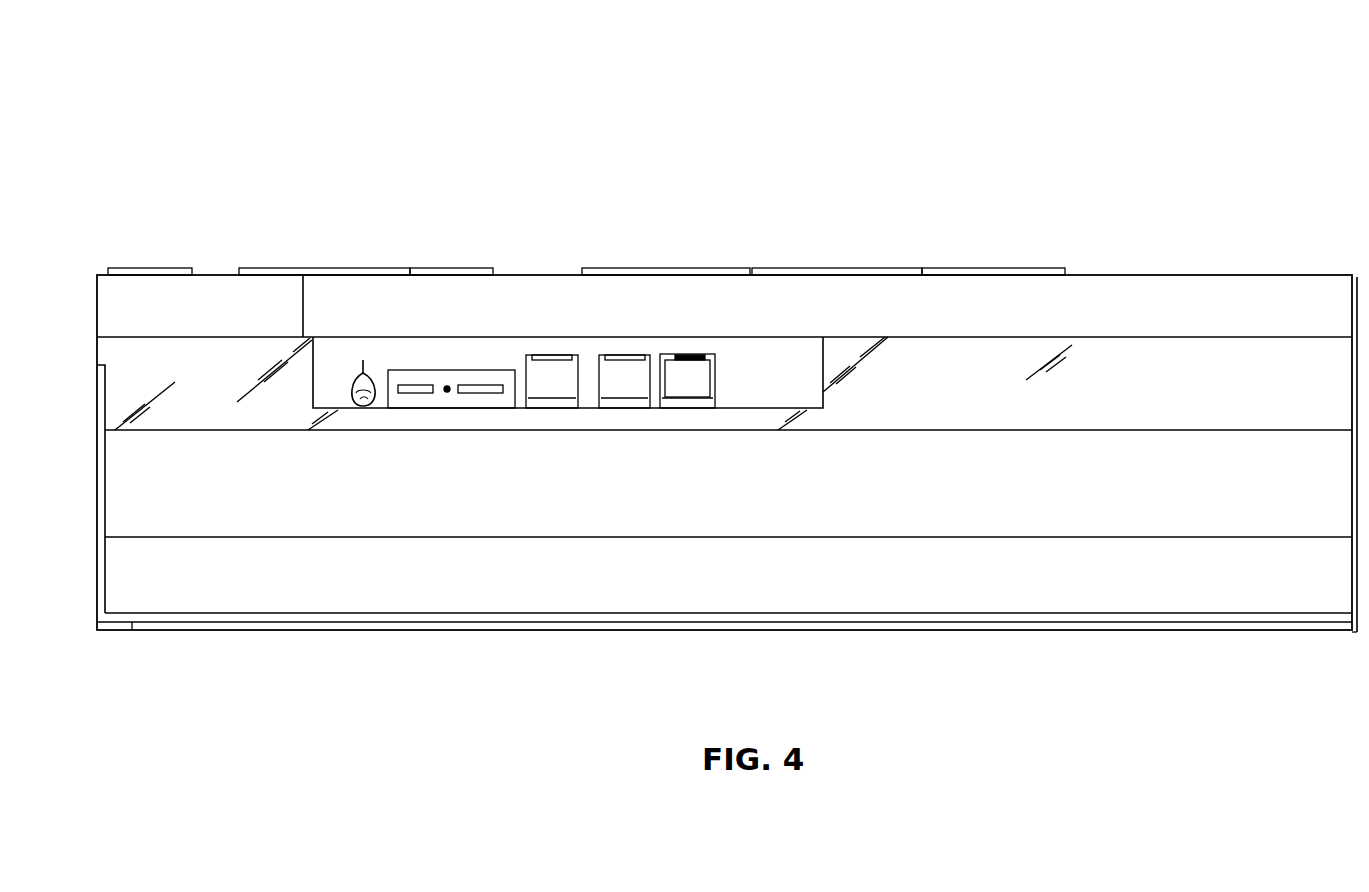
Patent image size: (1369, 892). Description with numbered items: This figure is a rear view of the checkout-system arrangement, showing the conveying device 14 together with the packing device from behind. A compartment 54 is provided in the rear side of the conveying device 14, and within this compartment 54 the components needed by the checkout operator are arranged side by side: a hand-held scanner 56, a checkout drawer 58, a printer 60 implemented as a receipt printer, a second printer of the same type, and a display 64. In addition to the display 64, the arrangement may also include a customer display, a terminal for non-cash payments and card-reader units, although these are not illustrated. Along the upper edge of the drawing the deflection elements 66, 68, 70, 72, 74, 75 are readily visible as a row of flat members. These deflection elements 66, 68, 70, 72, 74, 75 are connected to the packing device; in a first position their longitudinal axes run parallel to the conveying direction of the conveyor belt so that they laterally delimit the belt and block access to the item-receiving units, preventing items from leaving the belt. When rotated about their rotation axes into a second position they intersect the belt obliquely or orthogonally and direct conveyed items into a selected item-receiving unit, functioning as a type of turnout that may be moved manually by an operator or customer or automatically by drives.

The conveying device 14 is at (991, 168).
The compartment 54 is at (749, 368).
The hand-held scanner 56 is at (360, 406).
The checkout drawer 58 is at (453, 400).
The printer 60 is at (553, 390).
The display 64 is at (692, 388).
The deflection element 66 is at (145, 268).
The deflection element 68 is at (325, 268).
The deflection element 70 is at (429, 268).
The deflection element 72 is at (659, 268).
The deflection element 74 is at (811, 268).
The deflection element 75 is at (998, 268).